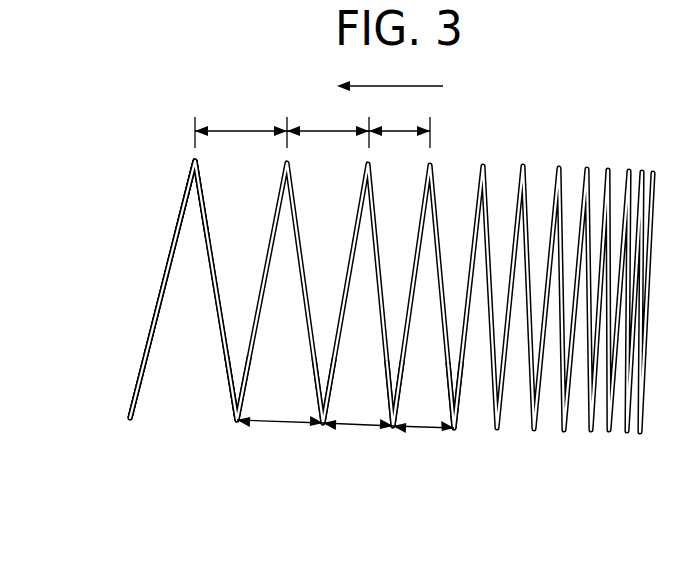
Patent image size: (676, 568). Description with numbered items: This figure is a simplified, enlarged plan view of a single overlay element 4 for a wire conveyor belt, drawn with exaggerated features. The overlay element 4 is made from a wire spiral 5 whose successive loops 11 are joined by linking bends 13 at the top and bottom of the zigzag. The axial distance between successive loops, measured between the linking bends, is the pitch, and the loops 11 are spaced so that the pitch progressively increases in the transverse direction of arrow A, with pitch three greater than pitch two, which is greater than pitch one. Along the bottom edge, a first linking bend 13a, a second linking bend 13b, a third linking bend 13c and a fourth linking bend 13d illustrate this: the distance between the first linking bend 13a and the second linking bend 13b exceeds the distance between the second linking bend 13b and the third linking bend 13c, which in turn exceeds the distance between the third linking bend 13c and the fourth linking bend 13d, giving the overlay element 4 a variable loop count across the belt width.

The overlay element 4 is at (488, 118).
The wire spiral 5 is at (157, 260).
The loops 11 is at (232, 426).
The coil apex 13 is at (184, 152).
The first linking bend 13a is at (238, 434).
The second linking bend 13b is at (324, 437).
The third linking bend 13c is at (394, 440).
The fourth linking bend 13d is at (455, 442).